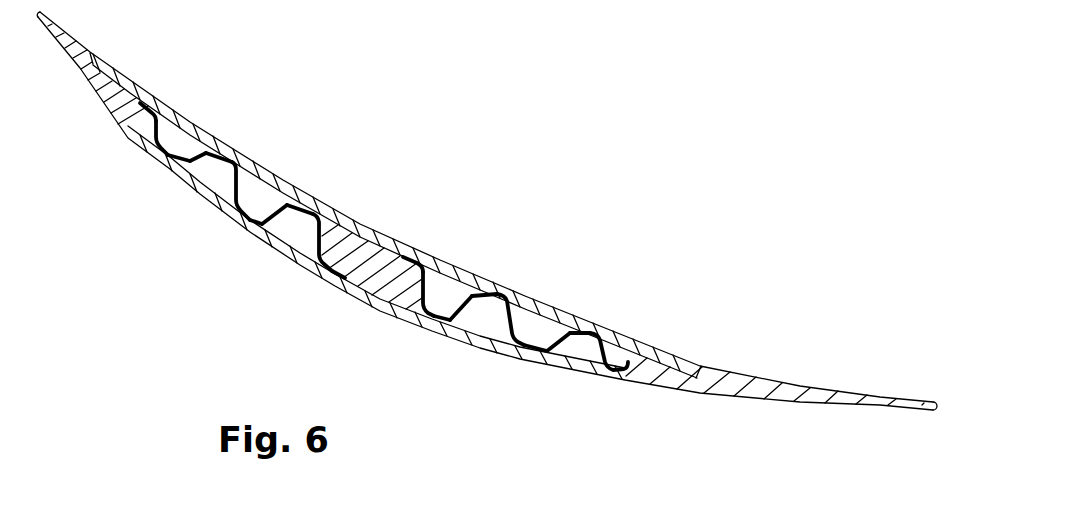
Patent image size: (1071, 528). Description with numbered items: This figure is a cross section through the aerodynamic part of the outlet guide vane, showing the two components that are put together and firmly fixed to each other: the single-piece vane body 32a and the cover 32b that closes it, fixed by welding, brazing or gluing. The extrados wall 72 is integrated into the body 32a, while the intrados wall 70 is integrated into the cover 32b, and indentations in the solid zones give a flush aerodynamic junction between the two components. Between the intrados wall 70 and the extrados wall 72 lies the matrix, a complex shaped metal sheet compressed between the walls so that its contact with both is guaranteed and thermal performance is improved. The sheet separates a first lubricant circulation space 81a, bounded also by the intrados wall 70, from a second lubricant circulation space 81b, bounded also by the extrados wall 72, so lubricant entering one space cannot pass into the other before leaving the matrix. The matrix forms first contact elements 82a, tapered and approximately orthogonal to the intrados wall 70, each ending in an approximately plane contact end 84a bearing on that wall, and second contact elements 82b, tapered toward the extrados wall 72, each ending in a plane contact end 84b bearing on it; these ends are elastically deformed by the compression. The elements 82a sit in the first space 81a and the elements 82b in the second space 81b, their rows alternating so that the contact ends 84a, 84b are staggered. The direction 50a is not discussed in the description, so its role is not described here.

The vane body 32a is at (700, 402).
The cover 32b is at (667, 347).
The blade lower skin 50a is at (597, 386).
The intrados wall 70 is at (283, 187).
The extrados wall 72 is at (393, 312).
The first lubricant circulation space 81a is at (256, 184).
The second lubricant circulation space 81b is at (480, 346).
The first intrados wall contact element 82a is at (194, 157).
The second contact element 82b is at (144, 108).
The contact end 84a is at (218, 150).
The contact end 84b is at (157, 156).